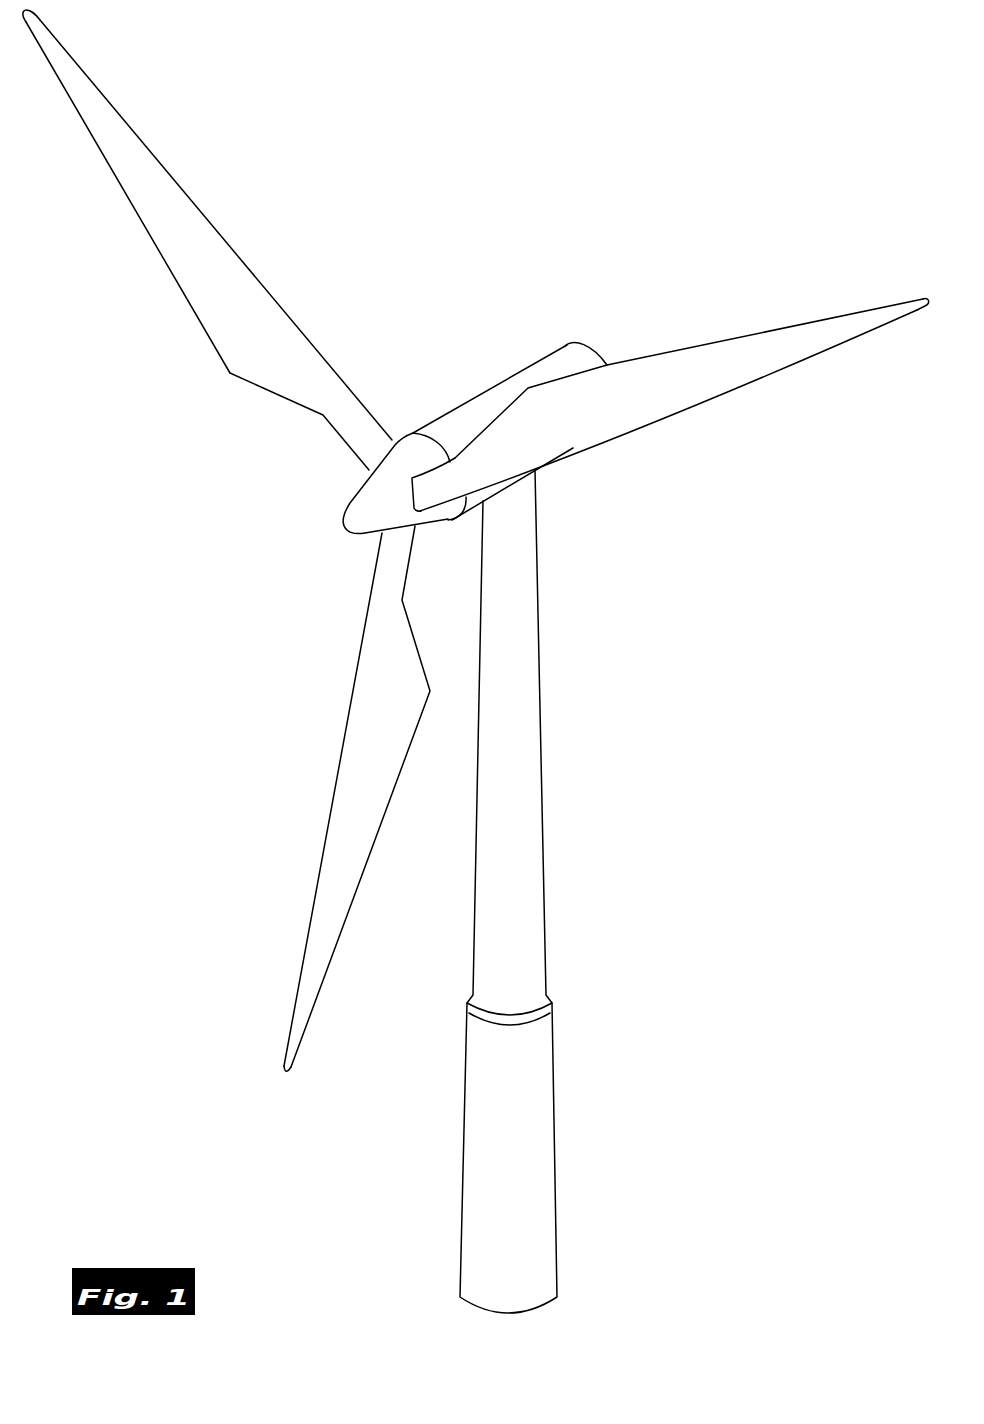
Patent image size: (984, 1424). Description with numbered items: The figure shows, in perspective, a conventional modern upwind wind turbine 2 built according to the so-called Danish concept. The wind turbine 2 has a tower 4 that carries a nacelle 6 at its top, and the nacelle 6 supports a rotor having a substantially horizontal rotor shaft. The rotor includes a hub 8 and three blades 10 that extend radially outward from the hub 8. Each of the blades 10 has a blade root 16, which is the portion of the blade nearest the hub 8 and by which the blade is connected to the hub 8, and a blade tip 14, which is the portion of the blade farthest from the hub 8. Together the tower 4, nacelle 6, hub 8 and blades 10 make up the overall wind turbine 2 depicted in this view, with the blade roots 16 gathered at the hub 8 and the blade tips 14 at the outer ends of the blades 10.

The wind turbine 2 is at (476, 661).
The tower 4 is at (541, 891).
The nacelle 6 is at (496, 426).
The hub 8 is at (367, 483).
The blades 10 is at (476, 540).
The blade tip 14 is at (476, 540).
The blade root 16 is at (436, 490).